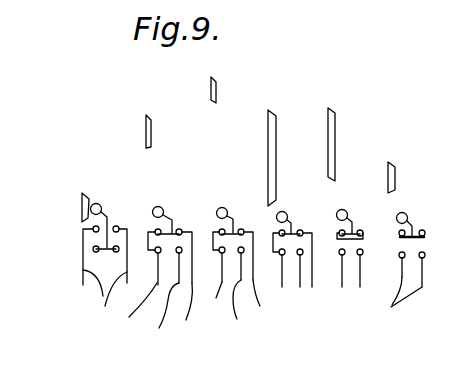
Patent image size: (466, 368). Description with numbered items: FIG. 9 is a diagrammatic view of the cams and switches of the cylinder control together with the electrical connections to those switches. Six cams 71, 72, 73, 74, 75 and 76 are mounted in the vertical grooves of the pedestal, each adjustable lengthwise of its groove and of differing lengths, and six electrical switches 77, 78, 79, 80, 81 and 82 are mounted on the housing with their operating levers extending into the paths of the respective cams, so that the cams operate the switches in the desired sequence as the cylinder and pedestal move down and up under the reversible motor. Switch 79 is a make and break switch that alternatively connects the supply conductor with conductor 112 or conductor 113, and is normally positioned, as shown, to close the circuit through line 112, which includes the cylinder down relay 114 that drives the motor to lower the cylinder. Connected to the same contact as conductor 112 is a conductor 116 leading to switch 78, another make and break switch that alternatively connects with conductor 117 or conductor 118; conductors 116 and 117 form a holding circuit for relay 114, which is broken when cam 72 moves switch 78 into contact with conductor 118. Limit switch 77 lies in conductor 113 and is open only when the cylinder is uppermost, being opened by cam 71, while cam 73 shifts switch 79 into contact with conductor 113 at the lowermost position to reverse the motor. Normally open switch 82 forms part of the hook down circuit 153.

The cam 71 is at (82, 203).
The cam 72 is at (146, 130).
The cam 73 is at (211, 87).
The cam 74 is at (268, 137).
The cam 75 is at (328, 147).
The cam 76 is at (388, 175).
The limit switch 77 is at (110, 214).
The switch 78 is at (190, 194).
The switch 79 is at (236, 212).
The switch 80 is at (297, 223).
The switch 81 is at (356, 224).
The switch 82 is at (418, 220).
The conductor 112 is at (267, 301).
The conductor 113 is at (102, 296).
The cylinder down relay 114 is at (210, 300).
The conductor 116 is at (129, 304).
The conductor 117 is at (188, 311).
The conductor 118 is at (156, 315).
The hook down circuit 153 is at (401, 303).